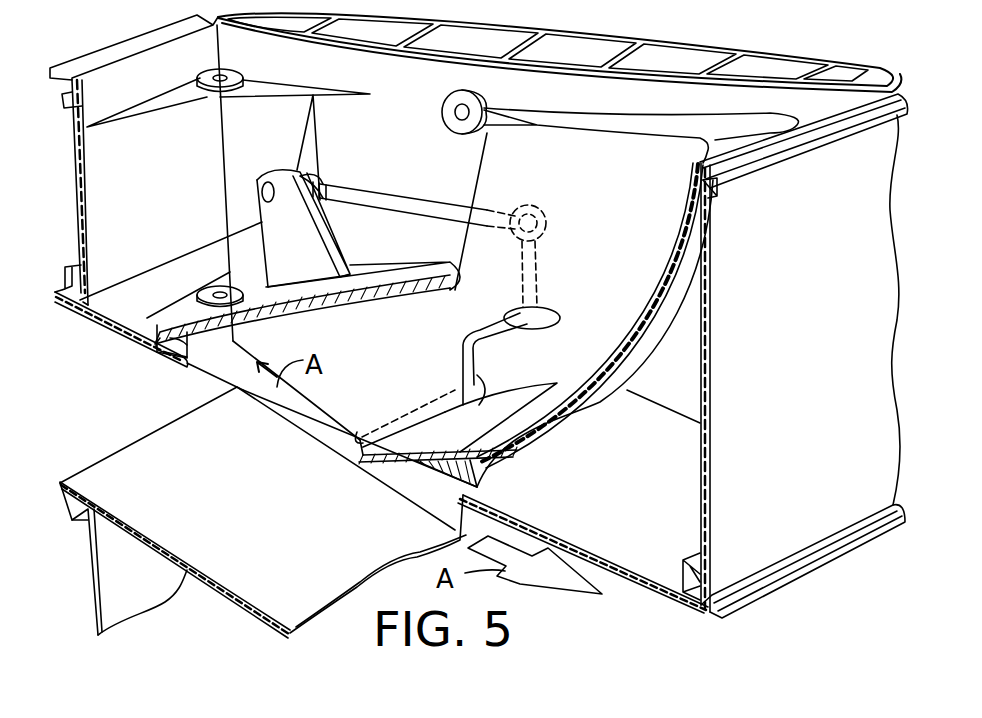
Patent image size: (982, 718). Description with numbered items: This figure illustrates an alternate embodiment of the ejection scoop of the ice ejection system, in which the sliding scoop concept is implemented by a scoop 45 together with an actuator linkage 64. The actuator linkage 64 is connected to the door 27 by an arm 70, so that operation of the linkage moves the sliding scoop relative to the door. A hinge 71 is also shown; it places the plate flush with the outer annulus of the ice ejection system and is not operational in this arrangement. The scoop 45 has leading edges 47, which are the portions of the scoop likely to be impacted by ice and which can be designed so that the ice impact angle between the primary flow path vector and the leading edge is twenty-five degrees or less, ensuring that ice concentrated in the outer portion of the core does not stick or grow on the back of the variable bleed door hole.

The door 27 is at (273, 222).
The scoop 45 is at (619, 198).
The leading edges 47 is at (345, 462).
The actuator linkage 64 is at (413, 186).
The arm 70 is at (475, 350).
The hinge 71 is at (188, 350).